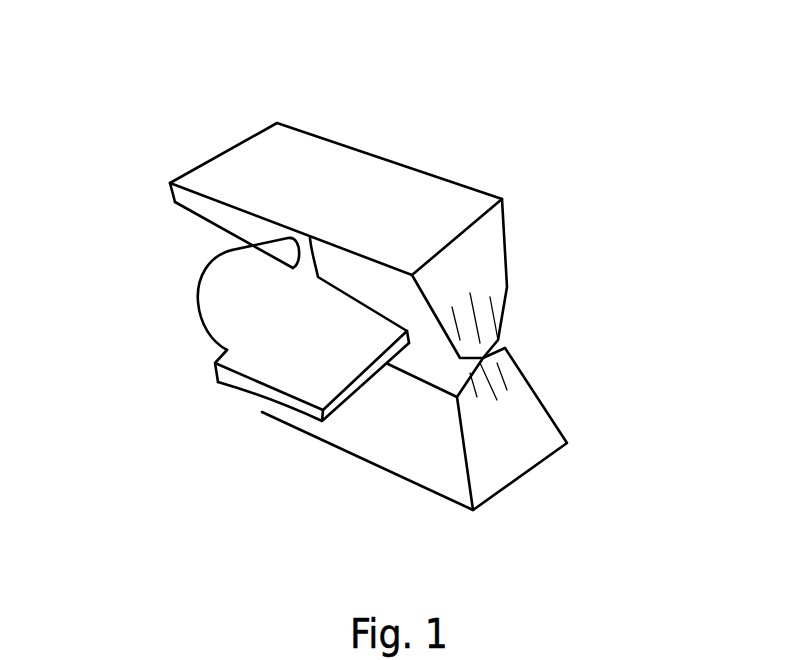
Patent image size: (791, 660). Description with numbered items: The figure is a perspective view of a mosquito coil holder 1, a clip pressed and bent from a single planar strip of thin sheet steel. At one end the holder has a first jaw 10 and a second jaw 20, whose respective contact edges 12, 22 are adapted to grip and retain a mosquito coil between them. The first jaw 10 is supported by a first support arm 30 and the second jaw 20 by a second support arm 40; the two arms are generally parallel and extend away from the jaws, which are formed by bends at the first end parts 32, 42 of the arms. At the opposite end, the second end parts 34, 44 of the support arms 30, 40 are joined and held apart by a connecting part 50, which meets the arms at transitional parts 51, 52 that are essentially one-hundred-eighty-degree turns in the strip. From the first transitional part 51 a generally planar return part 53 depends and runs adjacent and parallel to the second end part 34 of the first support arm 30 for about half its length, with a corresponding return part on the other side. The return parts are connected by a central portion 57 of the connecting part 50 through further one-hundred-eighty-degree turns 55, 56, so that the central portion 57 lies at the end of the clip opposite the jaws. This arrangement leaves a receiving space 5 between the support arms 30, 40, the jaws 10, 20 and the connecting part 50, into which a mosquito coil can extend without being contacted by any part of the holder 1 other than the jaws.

The mosquito coil holder 1 is at (455, 100).
The receiving space 5 is at (383, 298).
The first jaw 10 is at (523, 250).
The contact edge 12 is at (503, 320).
The second jaw 20 is at (571, 416).
The contact edge 22 is at (483, 358).
The first support arm 30 is at (428, 192).
The first end part 32 is at (452, 203).
The second end part 34 is at (288, 162).
The second support arm 40 is at (407, 443).
The first end part 42 is at (443, 470).
The second end part 44 is at (267, 410).
The connecting part 50 is at (200, 305).
The first transitional part 51 is at (173, 193).
The second transitional part 52 is at (215, 372).
The return part 53 is at (222, 220).
The turn 55 is at (300, 252).
The turn 56 is at (338, 410).
The central portion 57 is at (263, 320).